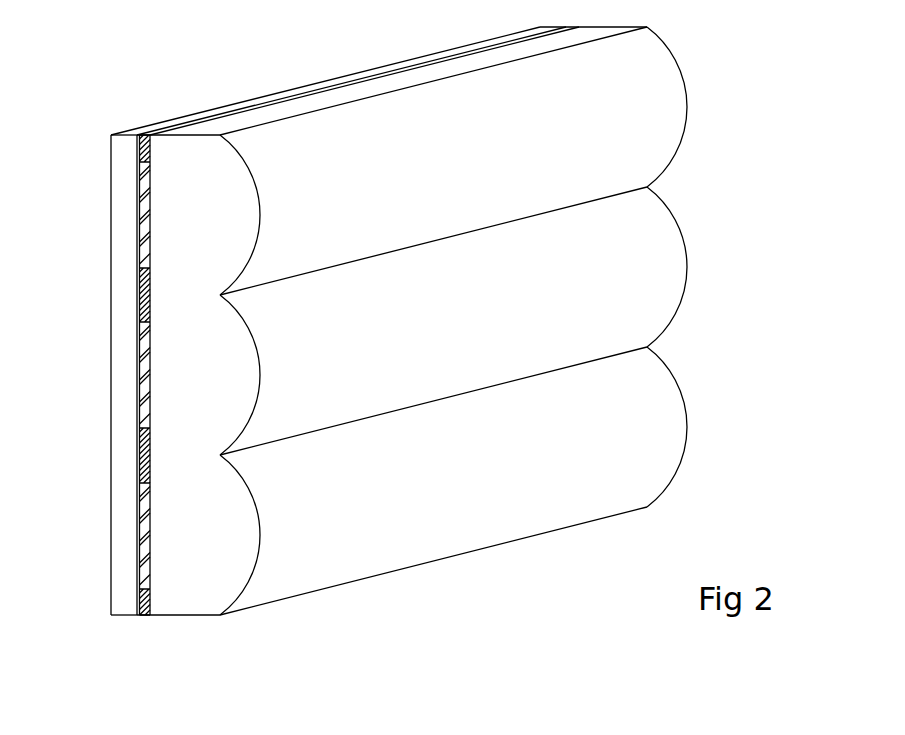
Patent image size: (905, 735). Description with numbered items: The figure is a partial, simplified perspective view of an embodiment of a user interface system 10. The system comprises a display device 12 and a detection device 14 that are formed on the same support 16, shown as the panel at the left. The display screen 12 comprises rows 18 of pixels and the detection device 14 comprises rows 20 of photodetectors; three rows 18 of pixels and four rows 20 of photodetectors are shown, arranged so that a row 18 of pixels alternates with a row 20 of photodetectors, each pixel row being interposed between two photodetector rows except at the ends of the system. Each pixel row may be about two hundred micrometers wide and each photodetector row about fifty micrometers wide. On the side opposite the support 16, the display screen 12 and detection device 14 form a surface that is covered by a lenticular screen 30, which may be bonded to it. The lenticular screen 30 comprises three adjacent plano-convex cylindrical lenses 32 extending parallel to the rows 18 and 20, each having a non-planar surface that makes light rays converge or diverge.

The user interface system 10 is at (778, 122).
The display device 12 is at (160, 178).
The detection device 14 is at (158, 606).
The support 16 is at (126, 155).
The rows of pixels 18 is at (142, 222).
The rows of photodetectors 20 is at (143, 152).
The lenticular screen 30 is at (688, 66).
The cylindrical lenses 32 is at (641, 50).